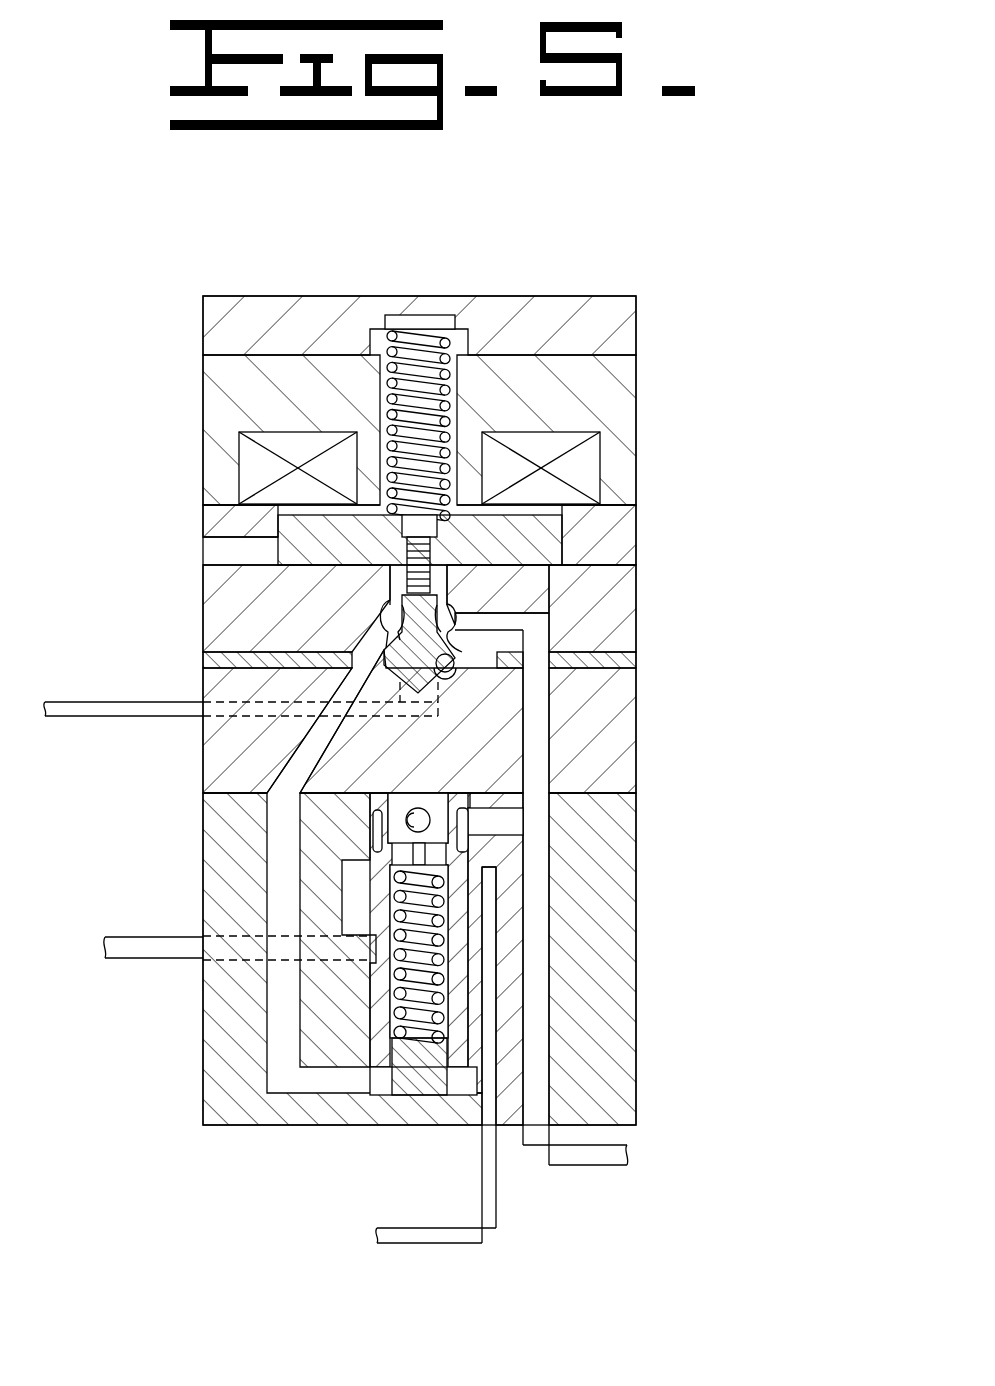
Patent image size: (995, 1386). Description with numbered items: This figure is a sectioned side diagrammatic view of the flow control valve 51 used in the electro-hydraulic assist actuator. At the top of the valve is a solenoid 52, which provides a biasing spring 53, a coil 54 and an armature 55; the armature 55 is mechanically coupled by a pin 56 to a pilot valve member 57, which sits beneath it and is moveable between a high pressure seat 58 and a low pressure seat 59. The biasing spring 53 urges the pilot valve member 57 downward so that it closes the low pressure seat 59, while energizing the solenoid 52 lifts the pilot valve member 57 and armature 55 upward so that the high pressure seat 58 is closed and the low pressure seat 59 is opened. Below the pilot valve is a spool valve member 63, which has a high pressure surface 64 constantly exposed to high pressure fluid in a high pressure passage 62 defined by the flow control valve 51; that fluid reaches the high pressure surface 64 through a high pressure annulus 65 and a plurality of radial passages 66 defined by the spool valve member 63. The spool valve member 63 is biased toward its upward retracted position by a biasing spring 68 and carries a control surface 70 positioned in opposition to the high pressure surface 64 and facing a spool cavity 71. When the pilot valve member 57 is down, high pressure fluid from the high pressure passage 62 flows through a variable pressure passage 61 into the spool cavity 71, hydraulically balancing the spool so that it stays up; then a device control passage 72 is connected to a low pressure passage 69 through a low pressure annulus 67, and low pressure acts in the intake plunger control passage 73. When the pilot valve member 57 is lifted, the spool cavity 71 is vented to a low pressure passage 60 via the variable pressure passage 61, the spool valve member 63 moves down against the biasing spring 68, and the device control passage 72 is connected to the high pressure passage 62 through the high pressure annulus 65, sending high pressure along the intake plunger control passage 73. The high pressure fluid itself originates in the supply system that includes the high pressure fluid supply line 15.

The high pressure fluid supply line 15 is at (600, 1153).
The flow control valve 51 is at (700, 386).
The solenoid 52 is at (192, 410).
The biasing spring 53 is at (457, 343).
The coil 54 is at (238, 455).
The armature 55 is at (536, 512).
The pin 56 is at (500, 567).
The pilot valve member 57 is at (390, 585).
The high pressure seat 58 is at (386, 645).
The low pressure seat 59 is at (456, 660).
The low pressure passage 60 is at (222, 716).
The variable pressure passage 61 is at (310, 733).
The high pressure passage 62 is at (545, 925).
The spool valve member 63 is at (468, 896).
The high pressure surface 64 is at (382, 795).
The high pressure annulus 65 is at (372, 813).
The radial passages 66 is at (410, 822).
The low pressure annulus 67 is at (465, 940).
The biasing spring 68 is at (390, 1000).
The low pressure passage 69 is at (236, 953).
The control surface 70 is at (370, 1085).
The spool cavity 71 is at (290, 1093).
The device control passage 72 is at (488, 1055).
The intake plunger control passage 73 is at (448, 1240).